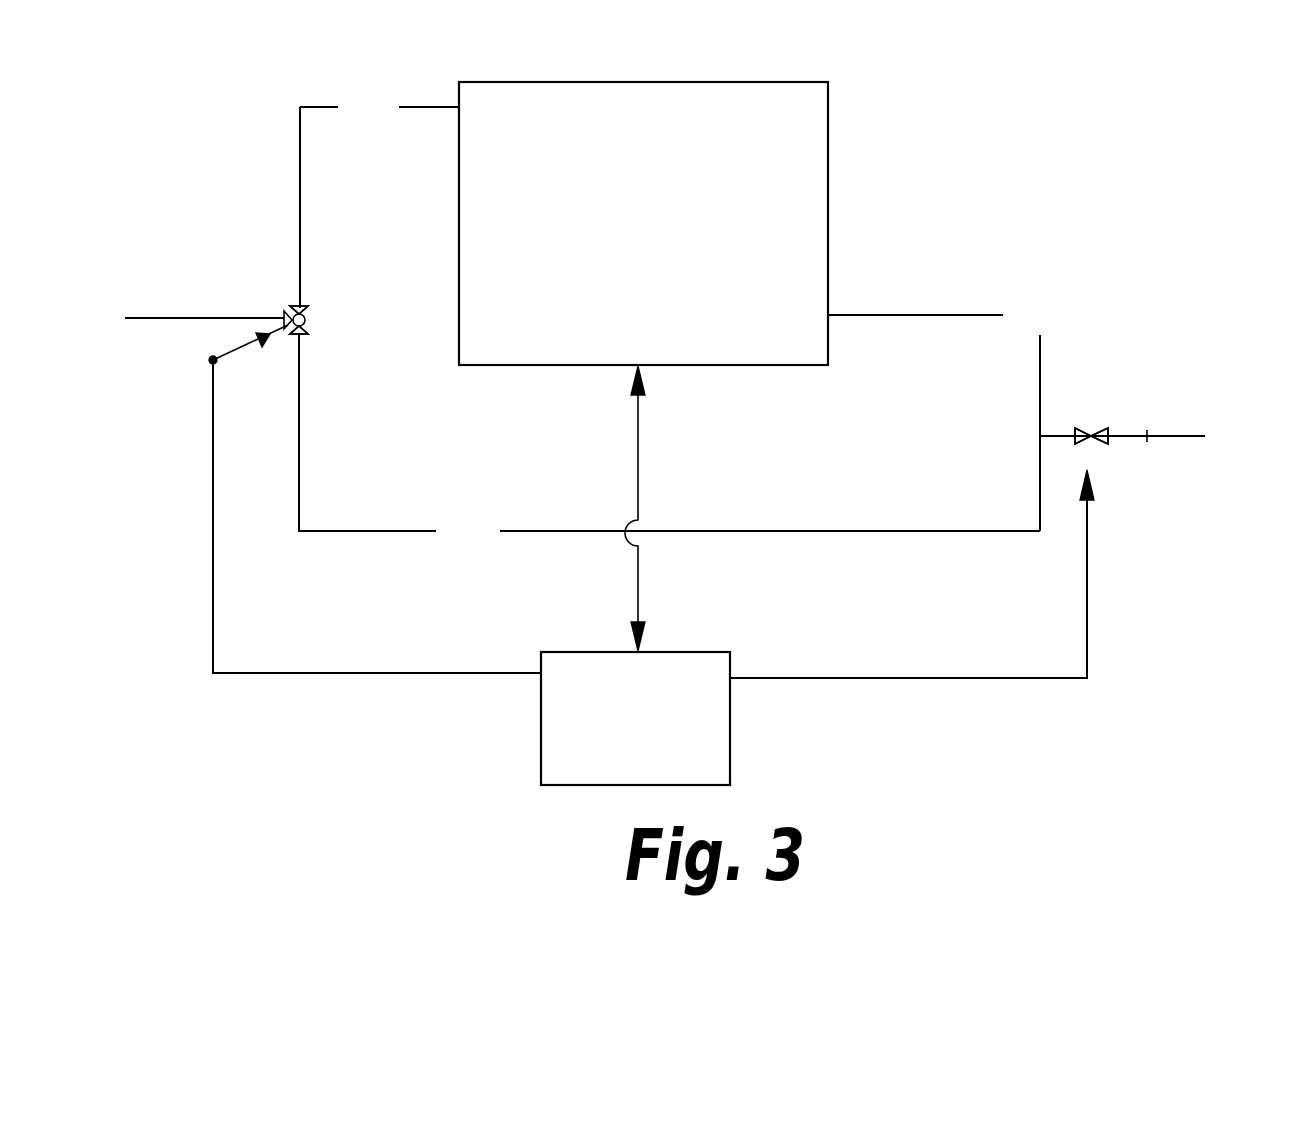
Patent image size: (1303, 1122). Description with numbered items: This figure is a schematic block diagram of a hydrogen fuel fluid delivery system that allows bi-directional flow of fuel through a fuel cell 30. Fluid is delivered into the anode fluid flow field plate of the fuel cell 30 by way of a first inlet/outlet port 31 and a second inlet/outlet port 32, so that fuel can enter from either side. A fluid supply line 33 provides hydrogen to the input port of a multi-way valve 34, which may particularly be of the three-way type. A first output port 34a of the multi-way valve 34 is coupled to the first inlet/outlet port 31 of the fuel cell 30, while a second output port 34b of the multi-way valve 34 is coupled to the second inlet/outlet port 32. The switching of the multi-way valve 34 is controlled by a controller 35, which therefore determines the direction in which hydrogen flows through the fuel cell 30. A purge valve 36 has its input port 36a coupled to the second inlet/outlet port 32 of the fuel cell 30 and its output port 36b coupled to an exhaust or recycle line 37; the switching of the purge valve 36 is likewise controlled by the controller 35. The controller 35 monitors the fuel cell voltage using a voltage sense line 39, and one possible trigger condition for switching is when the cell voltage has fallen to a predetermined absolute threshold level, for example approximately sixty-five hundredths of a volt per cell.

The fuel cell 30 is at (829, 126).
The first inlet/outlet port 31 is at (448, 106).
The second inlet/outlet port 32 is at (842, 316).
The fluid supply line 33 is at (166, 318).
The multi-way valve 34 is at (290, 332).
The first output port 34a is at (300, 300).
The second output port 34b is at (302, 338).
The controller 35 is at (541, 745).
The purge valve 36 is at (1094, 426).
The input port 36a is at (1067, 432).
The output port 36b is at (1108, 437).
The exhaust or recycle line 37 is at (1199, 434).
The voltage sense line 39 is at (636, 450).